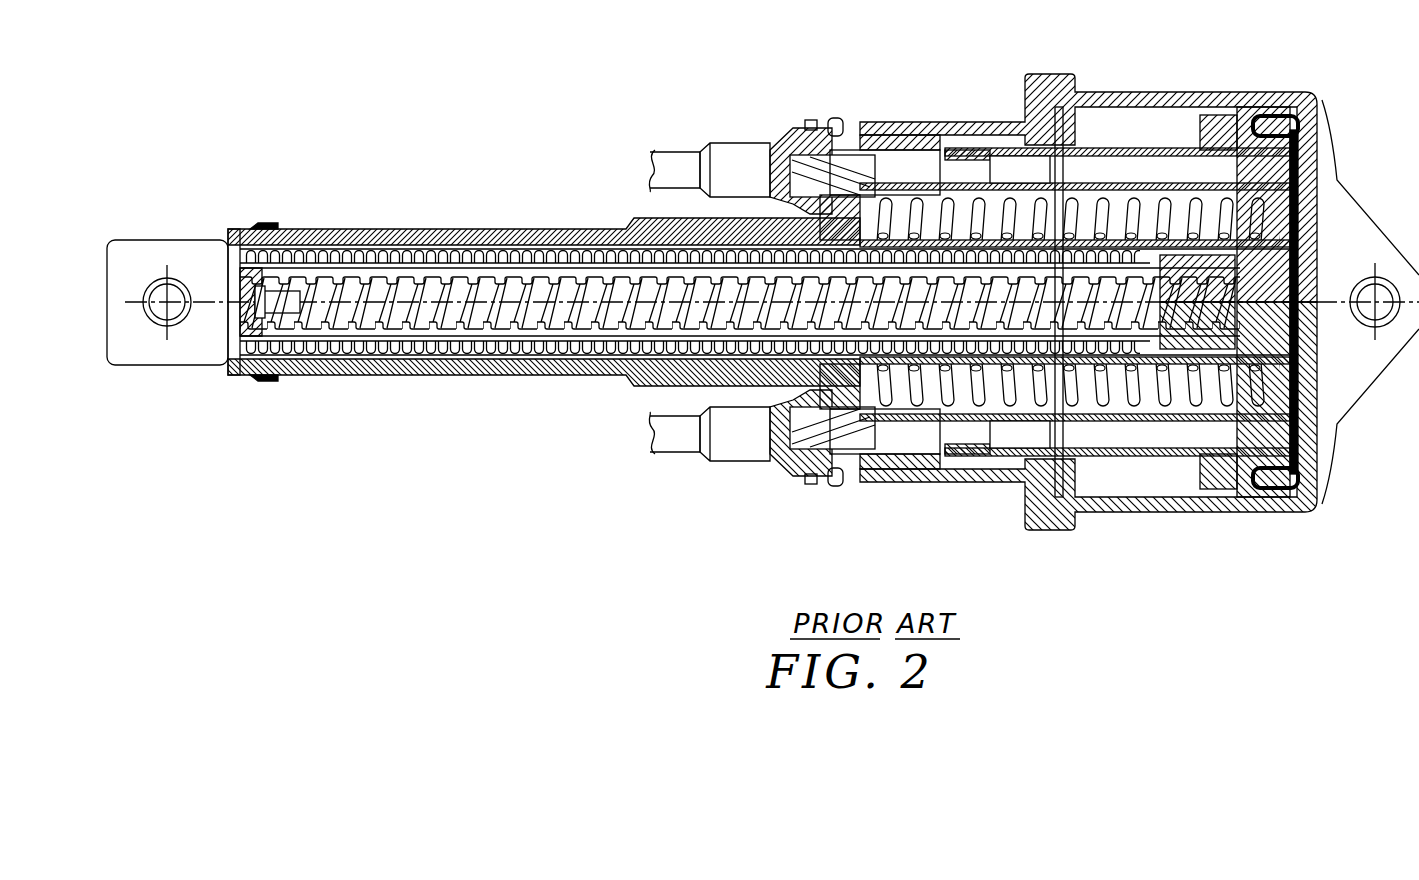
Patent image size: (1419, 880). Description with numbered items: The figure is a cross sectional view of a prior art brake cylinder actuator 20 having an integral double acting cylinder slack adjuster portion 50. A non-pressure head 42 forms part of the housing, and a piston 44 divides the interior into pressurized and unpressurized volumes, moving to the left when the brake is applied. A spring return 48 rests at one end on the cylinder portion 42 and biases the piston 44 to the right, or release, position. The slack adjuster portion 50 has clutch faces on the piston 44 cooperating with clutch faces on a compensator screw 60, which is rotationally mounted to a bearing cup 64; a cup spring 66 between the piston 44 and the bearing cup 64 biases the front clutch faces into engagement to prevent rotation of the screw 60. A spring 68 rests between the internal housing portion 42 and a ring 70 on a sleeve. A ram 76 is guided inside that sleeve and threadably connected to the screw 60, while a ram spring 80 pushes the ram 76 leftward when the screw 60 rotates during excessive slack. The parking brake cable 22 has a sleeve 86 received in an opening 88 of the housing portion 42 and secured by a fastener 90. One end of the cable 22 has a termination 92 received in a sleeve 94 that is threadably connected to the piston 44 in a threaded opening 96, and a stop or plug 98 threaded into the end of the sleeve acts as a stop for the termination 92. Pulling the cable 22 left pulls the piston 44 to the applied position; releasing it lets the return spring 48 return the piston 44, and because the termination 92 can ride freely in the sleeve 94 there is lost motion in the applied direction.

The brake cylinder actuator 20 is at (1322, 95).
The cable 22 is at (665, 165).
The non-pressure head 42 is at (878, 118).
The piston 44 is at (1223, 127).
The spring return 48 is at (937, 412).
The cylinder slack adjuster portion 50 is at (513, 185).
The compensator screw 60 is at (460, 292).
The bearing cup 64 is at (1133, 230).
The cup spring 66 is at (1270, 512).
The spring 68 is at (965, 200).
The ring 70 is at (1024, 203).
The ram 76 is at (150, 372).
The ram spring 80 is at (597, 350).
The sleeve 86 is at (788, 135).
The opening 88 is at (815, 120).
The fastener 90 is at (837, 118).
The termination 92 is at (1008, 180).
The sleeve 94 is at (1122, 205).
The threaded opening 96 is at (1262, 100).
The stop or plug 98 is at (957, 207).